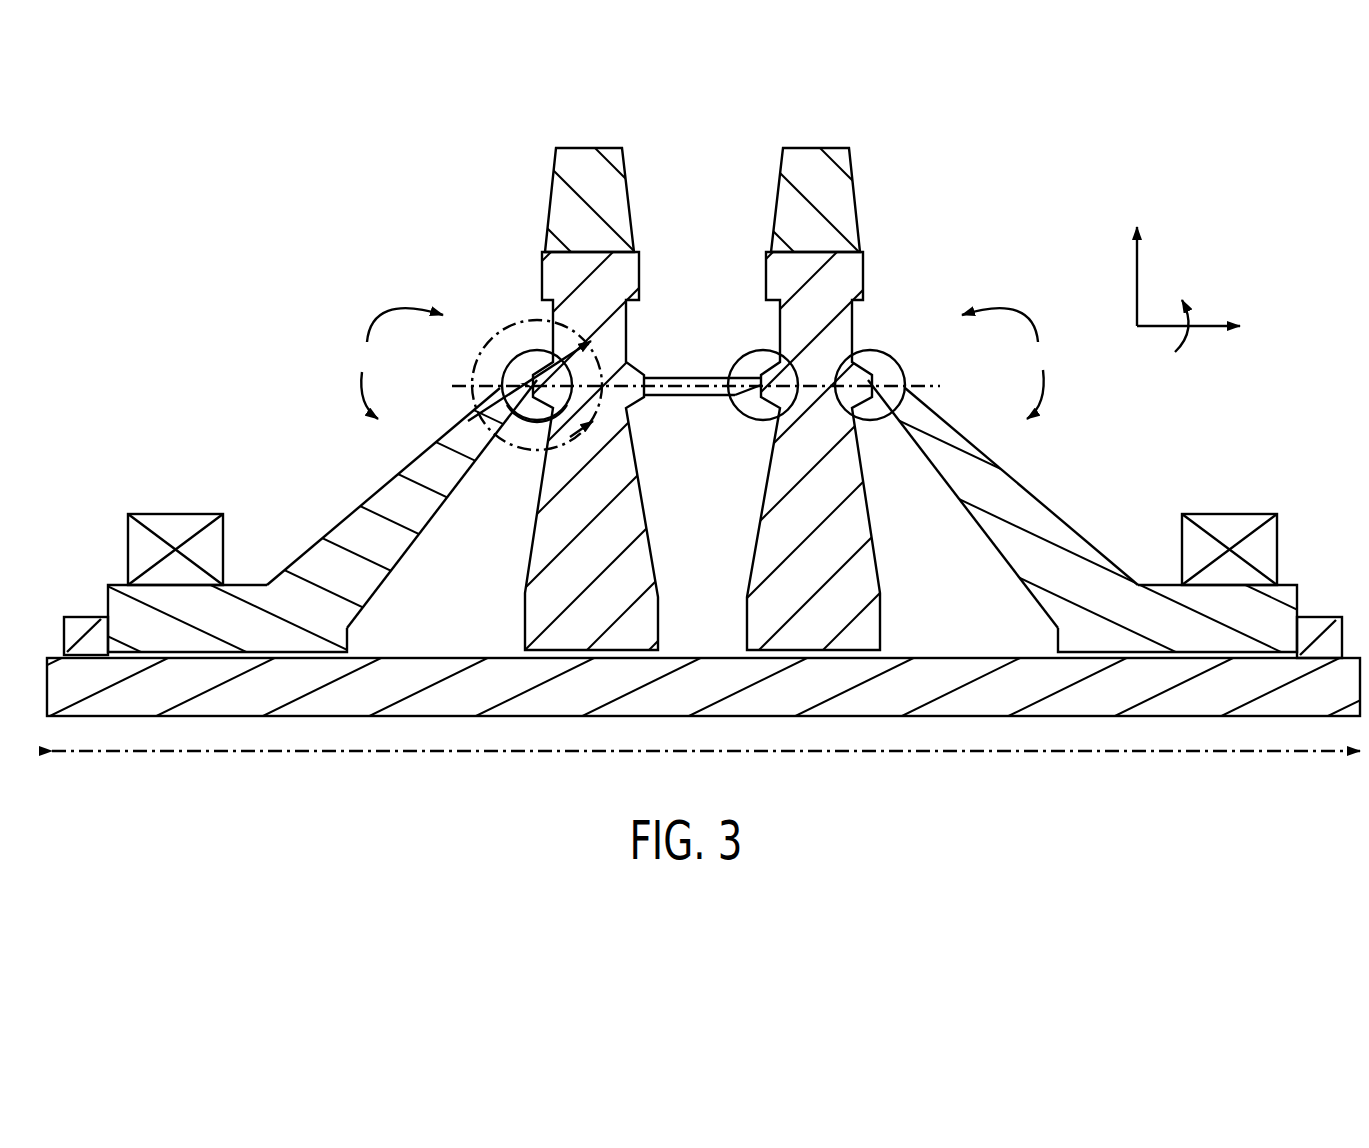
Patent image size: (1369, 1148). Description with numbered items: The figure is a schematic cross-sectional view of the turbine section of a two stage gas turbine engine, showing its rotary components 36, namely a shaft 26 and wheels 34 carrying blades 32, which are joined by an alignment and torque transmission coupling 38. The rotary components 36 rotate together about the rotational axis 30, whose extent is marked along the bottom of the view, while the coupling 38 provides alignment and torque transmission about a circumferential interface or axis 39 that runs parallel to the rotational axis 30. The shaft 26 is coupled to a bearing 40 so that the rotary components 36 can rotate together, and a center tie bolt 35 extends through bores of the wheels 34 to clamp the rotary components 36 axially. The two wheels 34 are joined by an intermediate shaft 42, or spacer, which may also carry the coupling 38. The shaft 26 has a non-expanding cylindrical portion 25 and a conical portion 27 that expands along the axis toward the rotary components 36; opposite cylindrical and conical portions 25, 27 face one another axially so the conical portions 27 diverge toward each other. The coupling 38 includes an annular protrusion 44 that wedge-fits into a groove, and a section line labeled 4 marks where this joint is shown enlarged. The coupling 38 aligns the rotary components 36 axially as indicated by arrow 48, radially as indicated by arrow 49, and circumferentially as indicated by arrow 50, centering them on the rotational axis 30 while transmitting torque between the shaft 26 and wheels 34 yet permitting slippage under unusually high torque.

The section line 4- 4 is at (539, 385).
The cylindrical portion 25 is at (108, 585).
The shaft 26 is at (345, 512).
The conical portion 27 is at (407, 557).
The rotational axis 30 is at (945, 757).
The blades 32 is at (634, 206).
The wheels 34 is at (553, 332).
The center tie bolt 35 is at (457, 695).
The rotary components 36 is at (698, 363).
The alignment and torque transmission coupling 38 is at (503, 363).
The circumferential interface or axis 39 is at (455, 388).
The bearing 40 is at (178, 514).
The intermediate shaft 42 is at (690, 377).
The protrusion 44 is at (530, 420).
The arrow 48 is at (1205, 326).
The arrow 49 is at (1138, 258).
The arrow 50 is at (1190, 320).